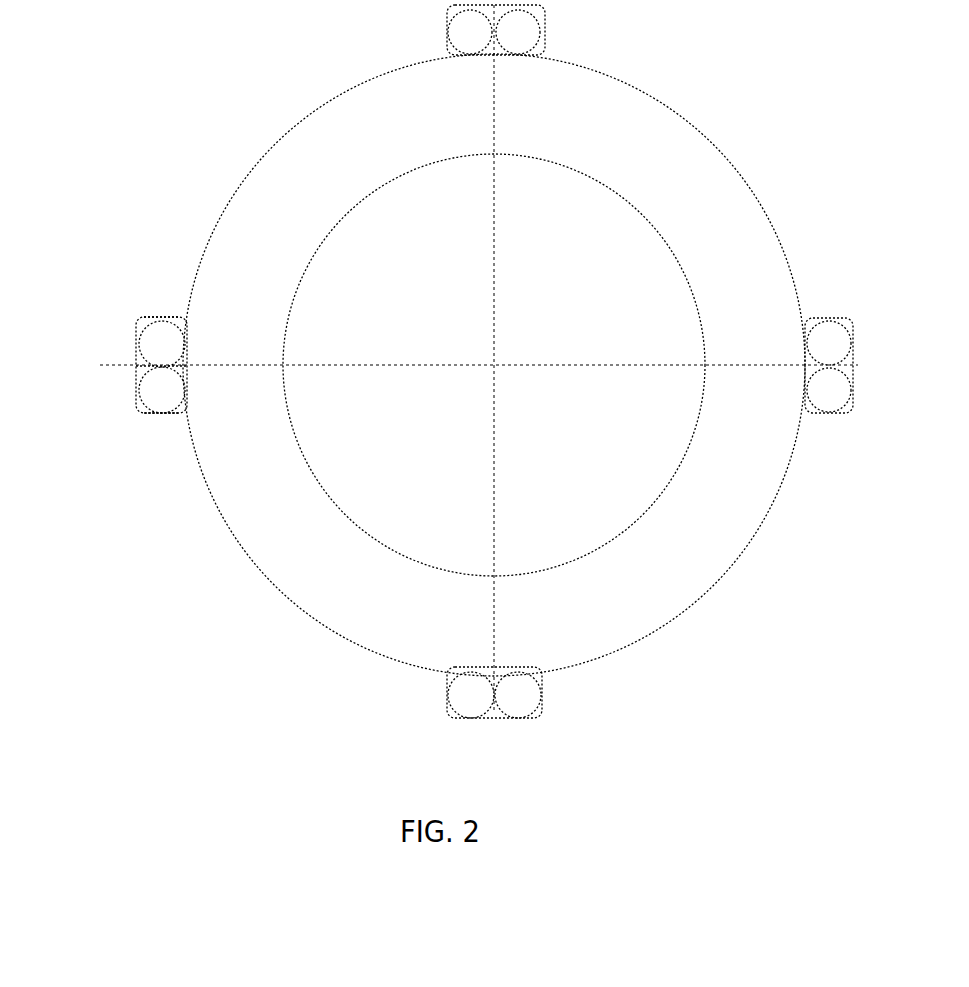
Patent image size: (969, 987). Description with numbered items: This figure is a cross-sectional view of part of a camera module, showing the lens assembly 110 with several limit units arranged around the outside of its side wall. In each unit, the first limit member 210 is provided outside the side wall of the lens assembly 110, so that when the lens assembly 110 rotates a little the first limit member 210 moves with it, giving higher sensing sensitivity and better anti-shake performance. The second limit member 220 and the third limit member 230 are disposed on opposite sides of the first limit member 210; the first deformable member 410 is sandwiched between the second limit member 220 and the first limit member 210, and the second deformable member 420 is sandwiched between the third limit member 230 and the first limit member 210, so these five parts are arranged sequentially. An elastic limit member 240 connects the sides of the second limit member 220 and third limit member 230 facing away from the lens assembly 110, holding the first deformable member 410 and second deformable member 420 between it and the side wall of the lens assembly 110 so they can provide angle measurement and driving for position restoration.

The lens assembly 110 is at (273, 201).
The first limit member 210 is at (157, 366).
The second limit member 220 is at (162, 414).
The third limit member 230 is at (164, 320).
The elastic limit member 240 is at (134, 376).
The first deformable member 410 is at (463, 35).
The second deformable member 420 is at (522, 32).